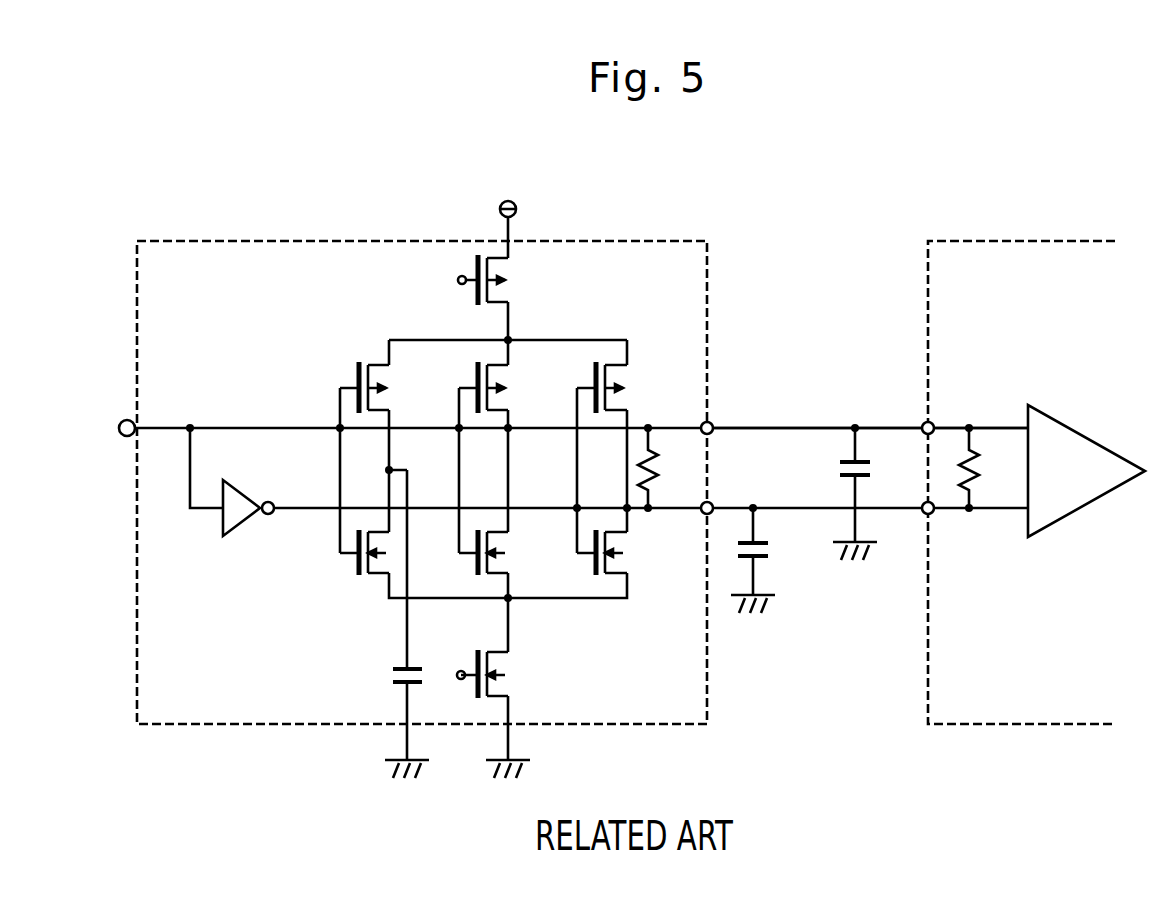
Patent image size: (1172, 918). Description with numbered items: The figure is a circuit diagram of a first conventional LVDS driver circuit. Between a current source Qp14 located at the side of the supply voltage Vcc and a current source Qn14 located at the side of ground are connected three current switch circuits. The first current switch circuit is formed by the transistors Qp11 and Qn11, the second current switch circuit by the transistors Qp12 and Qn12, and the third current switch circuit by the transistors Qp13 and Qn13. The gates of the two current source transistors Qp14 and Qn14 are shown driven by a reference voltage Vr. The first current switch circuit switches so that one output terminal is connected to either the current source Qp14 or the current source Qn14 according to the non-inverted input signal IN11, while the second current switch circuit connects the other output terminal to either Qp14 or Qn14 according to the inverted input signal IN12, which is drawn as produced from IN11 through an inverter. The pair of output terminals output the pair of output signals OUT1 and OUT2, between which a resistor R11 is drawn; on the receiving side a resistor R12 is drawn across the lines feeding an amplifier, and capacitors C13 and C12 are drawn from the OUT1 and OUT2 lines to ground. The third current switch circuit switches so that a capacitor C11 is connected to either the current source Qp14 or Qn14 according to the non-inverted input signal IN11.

The current source transistor at the supply voltage side Qp14 is at (516, 280).
The transistor of the third current switch circuit Qp13 is at (395, 395).
The transistor of the first current switch circuit Qp11 is at (514, 395).
The transistor of the second current switch circuit Qp12 is at (633, 435).
The transistor of the third current switch circuit Qn13 is at (355, 517).
The transistor of the first current switch circuit Qn11 is at (514, 501).
The transistor of the second current switch circuit Qn12 is at (632, 541).
The current source transistor at the ground side Qn14 is at (515, 714).
The resistor R11 is at (672, 468).
The resistor R12 is at (992, 468).
The capacitor C11 is at (387, 624).
The capacitor C12 is at (772, 560).
The capacitor C13 is at (874, 494).
The non-inverted input signal IN11 is at (581, 415).
The inverted input signal IN12 is at (448, 482).
The output signal OUT1 is at (867, 415).
The output signal OUT2 is at (867, 494).
The supply voltage Vcc is at (525, 220).
The reference voltage Vr is at (448, 474).